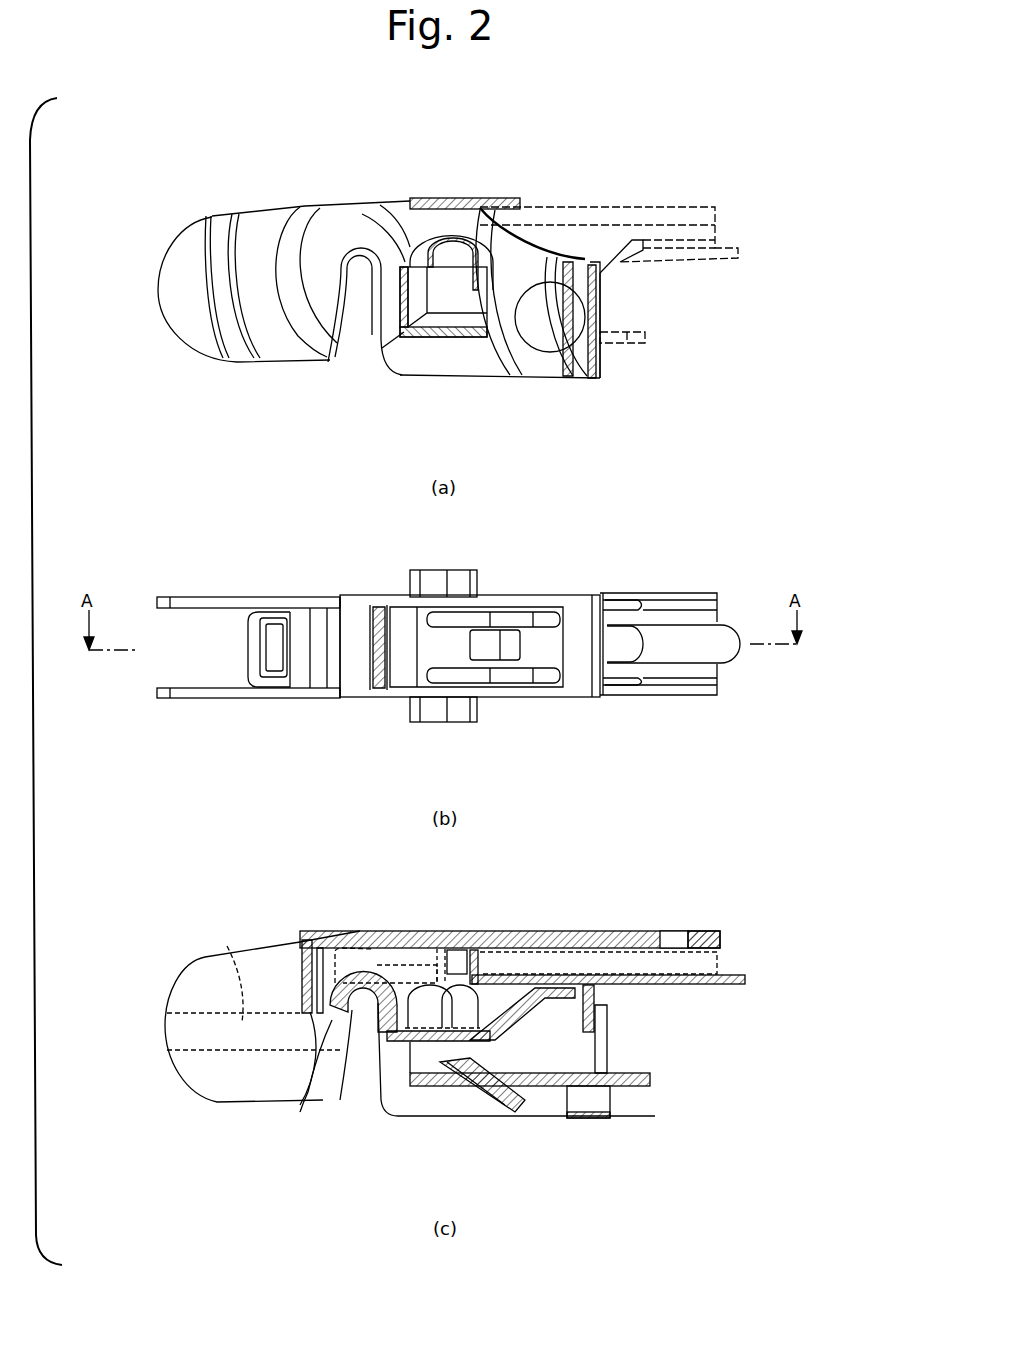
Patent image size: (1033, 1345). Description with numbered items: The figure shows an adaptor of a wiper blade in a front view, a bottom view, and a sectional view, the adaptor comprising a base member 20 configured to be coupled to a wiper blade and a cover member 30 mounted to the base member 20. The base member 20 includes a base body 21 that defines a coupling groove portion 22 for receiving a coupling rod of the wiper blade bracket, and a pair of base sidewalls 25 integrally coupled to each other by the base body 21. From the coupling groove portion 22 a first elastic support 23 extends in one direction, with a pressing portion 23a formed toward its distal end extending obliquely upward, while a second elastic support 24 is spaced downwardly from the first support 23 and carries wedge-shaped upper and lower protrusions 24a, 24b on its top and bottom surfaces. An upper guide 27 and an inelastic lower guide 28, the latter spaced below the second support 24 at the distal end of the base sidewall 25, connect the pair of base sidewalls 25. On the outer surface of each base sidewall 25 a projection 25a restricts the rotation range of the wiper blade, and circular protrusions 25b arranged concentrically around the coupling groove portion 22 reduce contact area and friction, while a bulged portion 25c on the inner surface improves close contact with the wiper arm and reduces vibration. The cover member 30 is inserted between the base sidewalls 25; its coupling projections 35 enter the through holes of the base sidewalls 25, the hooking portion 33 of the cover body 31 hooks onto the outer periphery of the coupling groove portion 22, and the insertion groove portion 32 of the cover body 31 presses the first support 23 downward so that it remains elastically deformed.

The base member 20 is at (537, 392).
The base body 21 is at (373, 965).
The coupling groove portion 22 is at (362, 280).
The first elastic support 23 is at (449, 952).
The pressing portion 23a is at (535, 988).
The second elastic support 24 is at (543, 675).
The upper protrusion 24a is at (497, 1093).
The lower protrusion 24b is at (490, 640).
The base sidewall 25 is at (430, 356).
The projection 25a is at (480, 208).
The circular protrusion 25b is at (208, 292).
The bulged portion 25c is at (208, 610).
The upper guide 27 is at (412, 1005).
The inelastic lower guide 28 is at (590, 1122).
The cover member 30 is at (642, 196).
The cover body 31 is at (493, 932).
The insertion groove portion 32 is at (731, 975).
The hooking portion 33 is at (311, 1088).
The coupling projection 35 is at (445, 250).